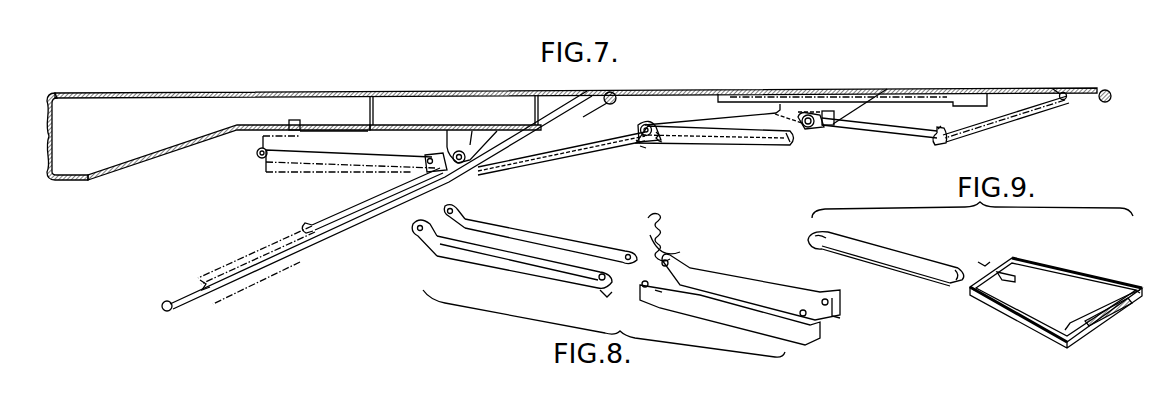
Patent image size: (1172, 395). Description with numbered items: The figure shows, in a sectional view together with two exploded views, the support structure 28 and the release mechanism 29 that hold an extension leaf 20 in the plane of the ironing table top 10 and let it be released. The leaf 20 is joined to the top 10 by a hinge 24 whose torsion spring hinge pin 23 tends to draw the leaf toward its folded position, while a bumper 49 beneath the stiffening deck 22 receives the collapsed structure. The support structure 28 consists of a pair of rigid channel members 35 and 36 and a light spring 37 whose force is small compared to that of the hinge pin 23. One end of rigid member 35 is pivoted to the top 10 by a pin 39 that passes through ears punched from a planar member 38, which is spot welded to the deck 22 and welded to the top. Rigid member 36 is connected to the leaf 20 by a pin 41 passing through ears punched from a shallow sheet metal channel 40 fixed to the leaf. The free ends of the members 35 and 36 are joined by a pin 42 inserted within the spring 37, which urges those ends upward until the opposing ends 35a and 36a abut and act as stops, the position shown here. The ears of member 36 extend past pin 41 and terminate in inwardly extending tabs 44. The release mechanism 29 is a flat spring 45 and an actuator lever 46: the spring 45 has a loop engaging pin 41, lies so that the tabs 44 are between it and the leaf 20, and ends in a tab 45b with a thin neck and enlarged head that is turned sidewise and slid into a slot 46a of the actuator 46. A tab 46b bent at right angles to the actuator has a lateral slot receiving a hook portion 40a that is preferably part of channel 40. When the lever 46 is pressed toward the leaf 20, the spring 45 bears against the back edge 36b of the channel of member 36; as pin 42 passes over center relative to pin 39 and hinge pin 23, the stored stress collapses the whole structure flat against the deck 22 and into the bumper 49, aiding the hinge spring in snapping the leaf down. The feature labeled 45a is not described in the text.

In FIG. 7, the top 10 is at (297, 91).
In FIG. 7, the extension leaf 20 is at (806, 88).
In FIG. 7, the stiffening deck 22 is at (488, 130).
In FIG. 7, the torsion spring hinge pin 23 is at (610, 91).
In FIG. 7, the hinge 24 is at (607, 110).
In FIG. 7, the support structure 28 is at (732, 148).
In FIG. 8, the support structure 28 is at (598, 291).
In FIG. 7, the release mechanism 29 is at (305, 225).
In FIG. 9, the release mechanism 29 is at (970, 302).
In FIG. 7, the rigid member 35 is at (347, 117).
In FIG. 8, the rigid member 35 is at (548, 237).
In FIG. 7, the end of rigid member 35 35a is at (653, 143).
In FIG. 8, the end of rigid member 35 35a is at (614, 298).
In FIG. 7, the rigid member 36 is at (330, 172).
In FIG. 8, the rigid member 36 is at (749, 258).
In FIG. 7, the end of rigid member 36 36a is at (638, 143).
In FIG. 8, the end of rigid member 36 36a is at (662, 293).
In FIG. 7, the back edge 36b is at (786, 143).
In FIG. 7, the spring 37 is at (661, 132).
In FIG. 8, the spring 37 is at (670, 226).
In FIG. 7, the planar member 38 is at (425, 128).
In FIG. 7, the pin 39 is at (460, 164).
In FIG. 7, the sheet metal channel 40 is at (884, 100).
In FIG. 7, the hook portion 40a is at (200, 284).
In FIG. 7, the pin 41 is at (808, 129).
In FIG. 7, the pin 42 is at (258, 158).
In FIG. 7, the tabs 44 is at (838, 127).
In FIG. 8, the tabs 44 is at (838, 312).
In FIG. 7, the flat spring 45 is at (360, 204).
In FIG. 9, the flat spring 45 is at (912, 233).
In FIG. 7, the bar hook end 45a is at (775, 116).
In FIG. 9, the bar hook end 45a is at (808, 240).
In FIG. 7, the tab 45b is at (946, 133).
In FIG. 9, the tab 45b is at (966, 272).
In FIG. 7, the actuator lever 46 is at (225, 260).
In FIG. 9, the actuator lever 46 is at (1015, 328).
In FIG. 9, the slot 46a is at (1020, 280).
In FIG. 7, the tab 46b is at (1070, 101).
In FIG. 9, the tab 46b is at (1134, 288).
In FIG. 7, the bumper 49 is at (262, 140).